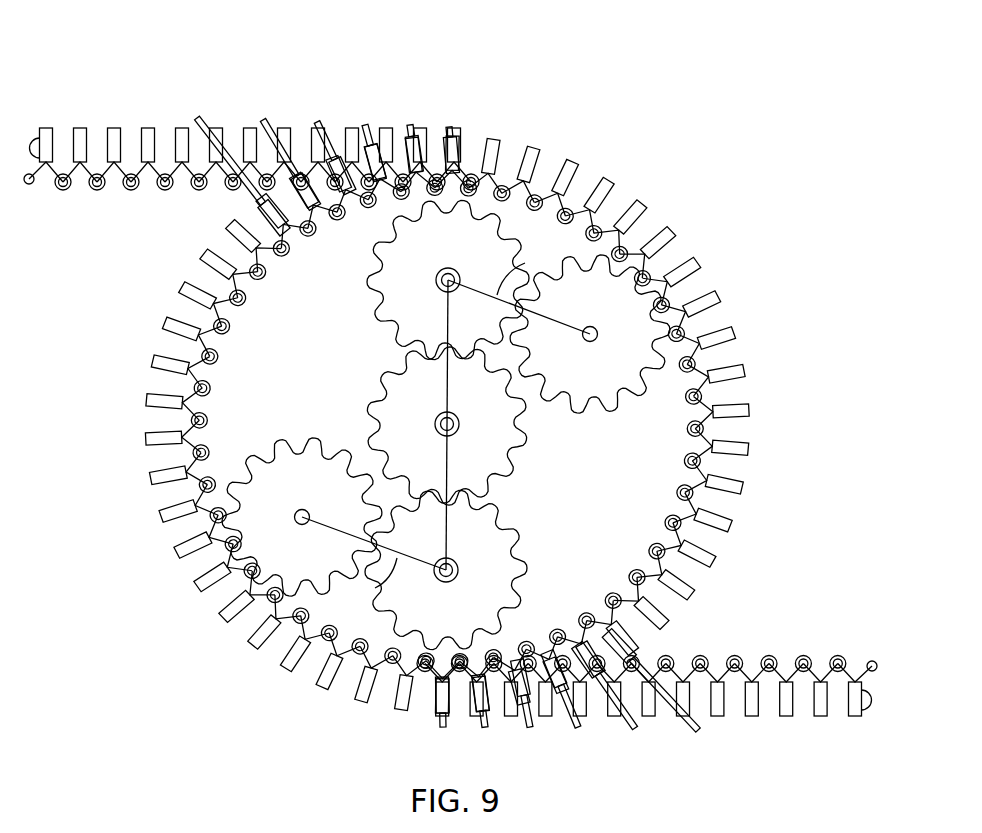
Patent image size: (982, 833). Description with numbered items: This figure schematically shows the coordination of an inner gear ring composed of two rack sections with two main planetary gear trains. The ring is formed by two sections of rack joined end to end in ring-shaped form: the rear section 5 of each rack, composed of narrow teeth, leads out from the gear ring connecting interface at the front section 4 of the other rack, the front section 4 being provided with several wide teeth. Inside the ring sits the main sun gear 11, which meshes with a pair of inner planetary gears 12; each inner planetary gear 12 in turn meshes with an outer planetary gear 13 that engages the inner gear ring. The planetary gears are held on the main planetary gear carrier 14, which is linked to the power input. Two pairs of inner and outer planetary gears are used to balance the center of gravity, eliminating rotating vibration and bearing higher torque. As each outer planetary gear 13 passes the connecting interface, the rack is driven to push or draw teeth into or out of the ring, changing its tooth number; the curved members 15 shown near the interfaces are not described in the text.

The front section 4 is at (452, 112).
The rear section 5 is at (182, 107).
The main sun gear 11 is at (505, 432).
The inner planetary gear 12 is at (385, 237).
The outer planetary gear 13 is at (600, 380).
The main planetary gear carrier 14 is at (450, 313).
The curved link 15 is at (525, 263).